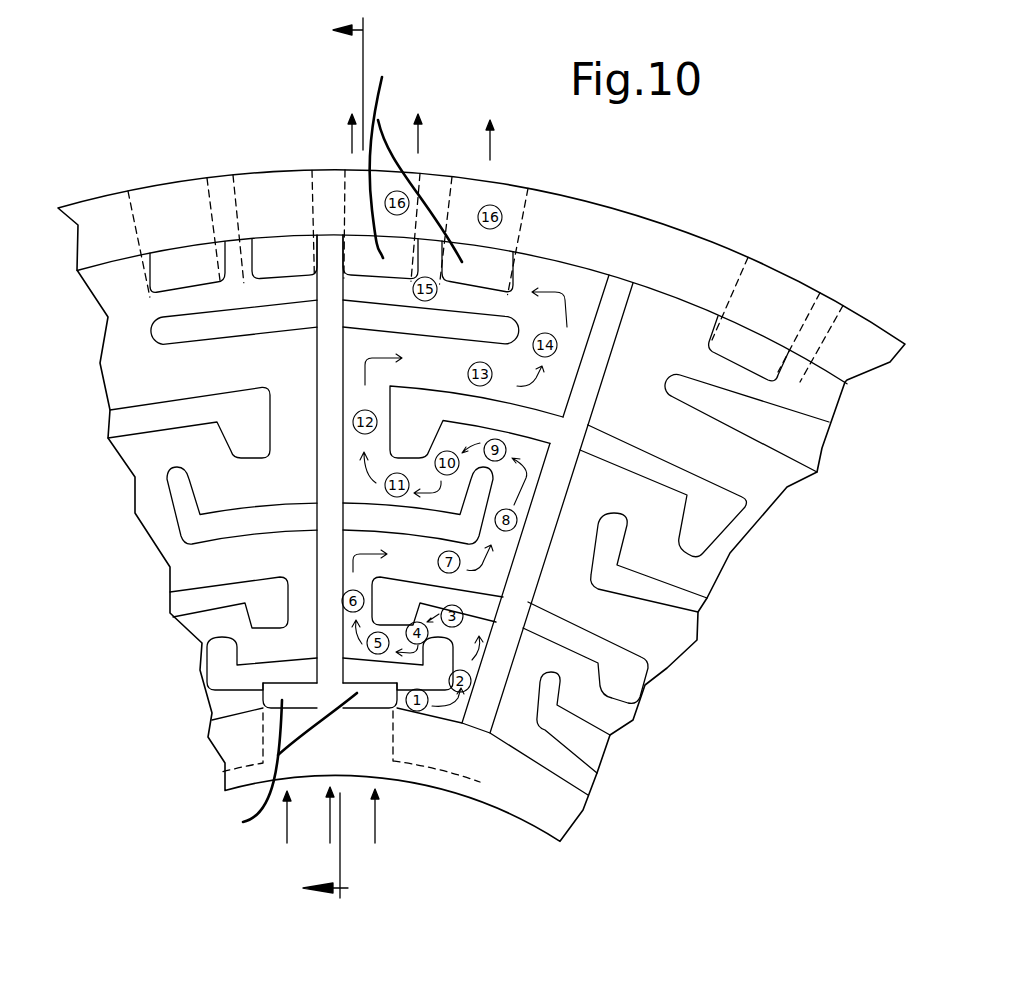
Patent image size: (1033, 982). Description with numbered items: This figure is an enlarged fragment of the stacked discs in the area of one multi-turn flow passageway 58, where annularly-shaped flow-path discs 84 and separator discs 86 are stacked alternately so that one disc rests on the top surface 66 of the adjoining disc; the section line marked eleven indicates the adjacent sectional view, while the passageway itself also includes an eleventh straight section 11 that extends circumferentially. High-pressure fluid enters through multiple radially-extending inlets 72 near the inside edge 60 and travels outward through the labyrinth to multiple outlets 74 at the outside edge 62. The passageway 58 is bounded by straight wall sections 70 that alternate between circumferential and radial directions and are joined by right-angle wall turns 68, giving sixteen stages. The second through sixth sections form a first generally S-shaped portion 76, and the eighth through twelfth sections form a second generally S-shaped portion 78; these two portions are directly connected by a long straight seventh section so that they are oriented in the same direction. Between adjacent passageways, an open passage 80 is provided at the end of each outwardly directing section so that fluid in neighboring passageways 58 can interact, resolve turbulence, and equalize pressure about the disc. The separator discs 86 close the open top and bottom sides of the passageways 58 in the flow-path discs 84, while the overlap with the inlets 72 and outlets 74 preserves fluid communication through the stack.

The eleventh straight section 11 is at (313, 461).
The flow passageway 58 is at (141, 306).
The inside edge 60 is at (466, 824).
The outside edge 62 is at (690, 228).
The top surface 66 is at (580, 230).
The right-angle wall turn 68 is at (600, 426).
The straight wall section 70 is at (612, 367).
The inlet 72 is at (281, 765).
The outlet 74 is at (415, 157).
The first S-shaped portion 76 is at (495, 624).
The second S-shaped portion 78 is at (548, 461).
The passage 80 is at (343, 357).
The flow-path disc 84 is at (481, 442).
The separator disc 86 is at (485, 476).